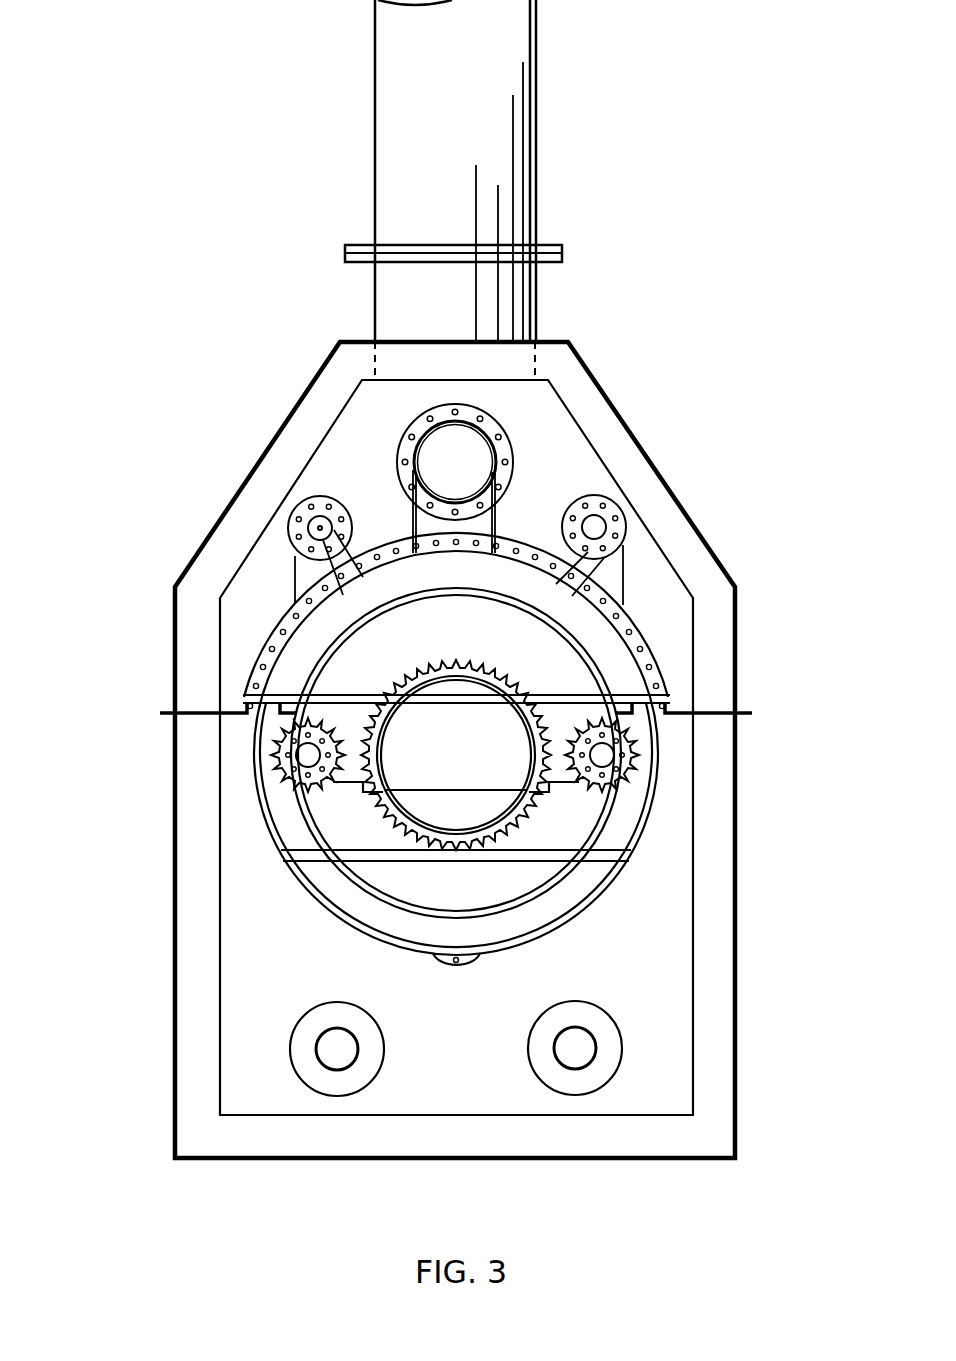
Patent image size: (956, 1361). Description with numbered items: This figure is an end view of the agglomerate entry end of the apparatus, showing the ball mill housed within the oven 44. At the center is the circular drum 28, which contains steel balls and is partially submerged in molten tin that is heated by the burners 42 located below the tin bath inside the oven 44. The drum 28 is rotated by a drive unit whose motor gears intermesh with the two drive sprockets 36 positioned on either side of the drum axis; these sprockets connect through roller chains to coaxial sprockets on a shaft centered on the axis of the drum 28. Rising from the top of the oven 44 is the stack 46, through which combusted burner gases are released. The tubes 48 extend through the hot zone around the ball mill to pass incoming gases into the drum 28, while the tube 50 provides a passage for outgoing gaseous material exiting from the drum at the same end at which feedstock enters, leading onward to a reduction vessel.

The drum 28 is at (380, 907).
The drive sprockets 36 is at (638, 787).
The burners 42 is at (313, 1045).
The oven 44 is at (717, 920).
The stack 46 is at (505, 128).
The tube 48 is at (322, 540).
The tube 50 is at (455, 450).